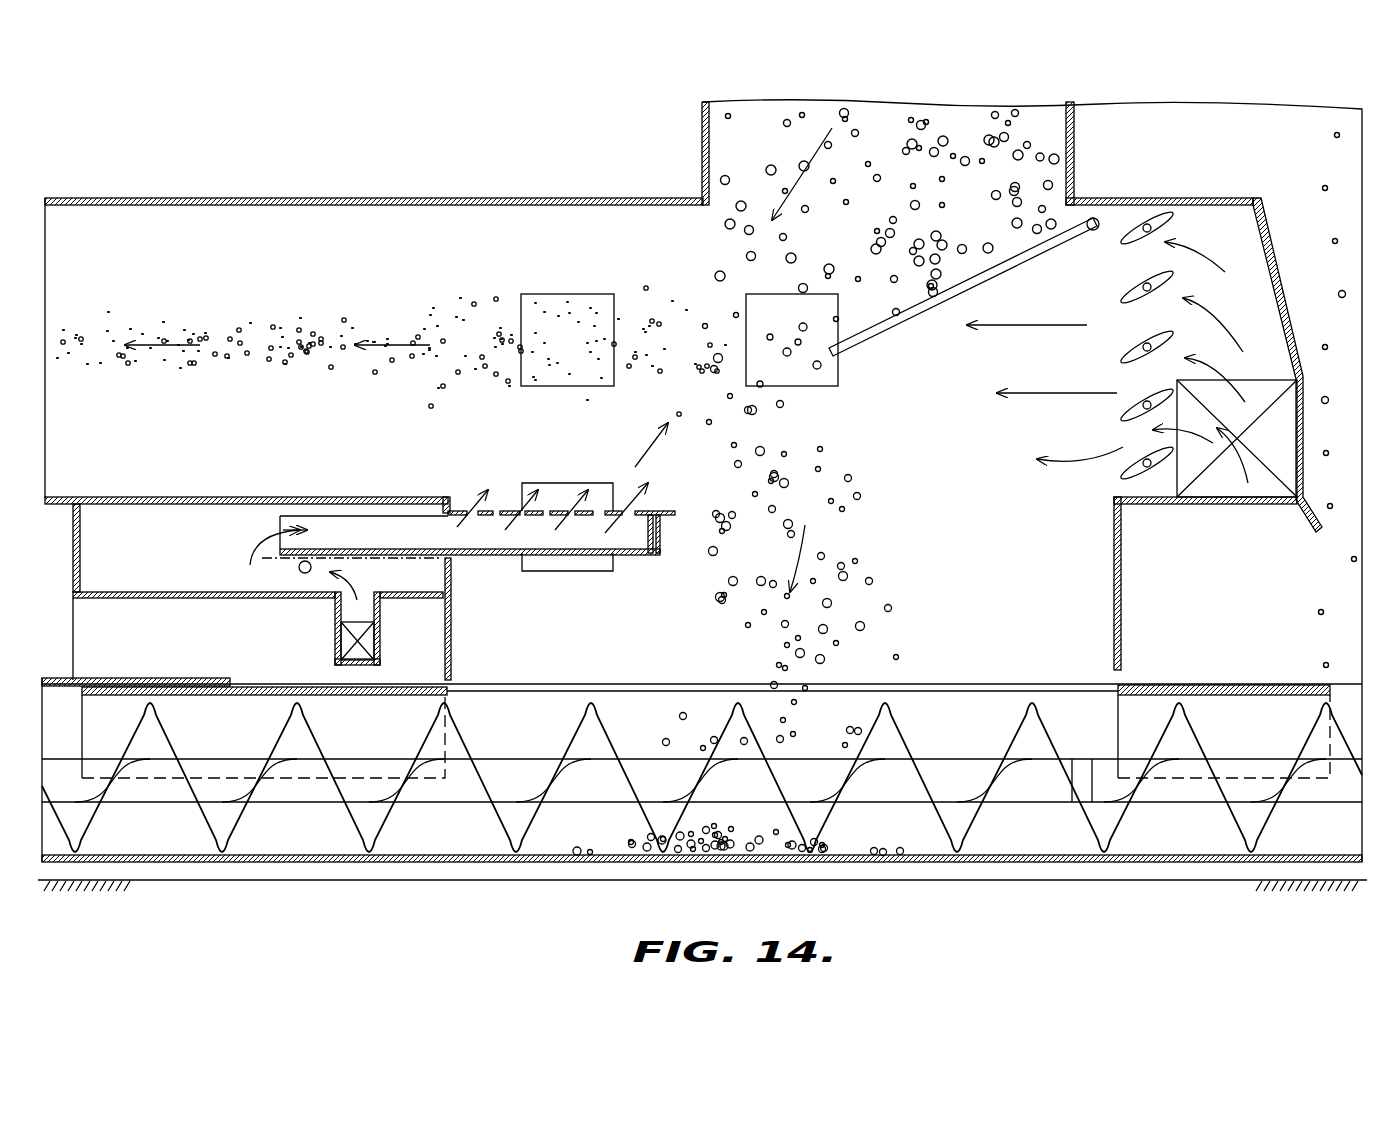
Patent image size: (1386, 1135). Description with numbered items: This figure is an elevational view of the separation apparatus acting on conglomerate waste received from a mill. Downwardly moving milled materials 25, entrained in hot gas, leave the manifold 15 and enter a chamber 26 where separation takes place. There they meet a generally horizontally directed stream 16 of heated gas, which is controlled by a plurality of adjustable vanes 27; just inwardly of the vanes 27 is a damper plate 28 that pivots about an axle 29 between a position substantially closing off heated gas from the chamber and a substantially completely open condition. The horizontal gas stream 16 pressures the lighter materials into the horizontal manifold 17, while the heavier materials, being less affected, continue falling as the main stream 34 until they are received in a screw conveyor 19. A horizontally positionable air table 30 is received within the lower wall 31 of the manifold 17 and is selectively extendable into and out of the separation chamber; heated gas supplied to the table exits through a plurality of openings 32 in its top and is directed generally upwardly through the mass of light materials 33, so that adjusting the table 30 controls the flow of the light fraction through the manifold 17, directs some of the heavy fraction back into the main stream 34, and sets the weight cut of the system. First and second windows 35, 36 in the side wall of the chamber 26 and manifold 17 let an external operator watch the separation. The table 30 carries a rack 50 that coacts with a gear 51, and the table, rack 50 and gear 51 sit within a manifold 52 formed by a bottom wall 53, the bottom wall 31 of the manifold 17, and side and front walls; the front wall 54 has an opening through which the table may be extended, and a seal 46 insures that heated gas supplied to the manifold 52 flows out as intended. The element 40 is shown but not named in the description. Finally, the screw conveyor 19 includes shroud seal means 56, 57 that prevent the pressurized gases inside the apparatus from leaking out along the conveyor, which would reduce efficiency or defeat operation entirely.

The manifold 15 is at (703, 116).
The horizontally directed stream of hot gases 16 is at (1073, 393).
The manifold 17 is at (287, 232).
The screw conveyor 19 is at (150, 702).
The milled materials 25 is at (1044, 161).
The chamber 26 is at (717, 238).
The adjustable vanes 27 is at (1133, 284).
The damper plate 28 is at (885, 338).
The axle 29 is at (1097, 218).
The air table 30 is at (583, 560).
The lower wall 31 is at (258, 497).
The openings 32 is at (503, 511).
The light materials 33 is at (490, 298).
The main stream 34 is at (848, 608).
The first window 35 is at (572, 296).
The second window 36 is at (793, 296).
The blower 40 is at (1268, 483).
The seal 46 is at (656, 535).
The rack 50 is at (373, 563).
The gear 51 is at (305, 575).
The manifold 52 is at (236, 598).
The bottom wall 53 is at (162, 598).
The front wall 54 is at (451, 568).
The shroud seal means 56 is at (443, 684).
The shroud seal means 57 is at (1240, 686).